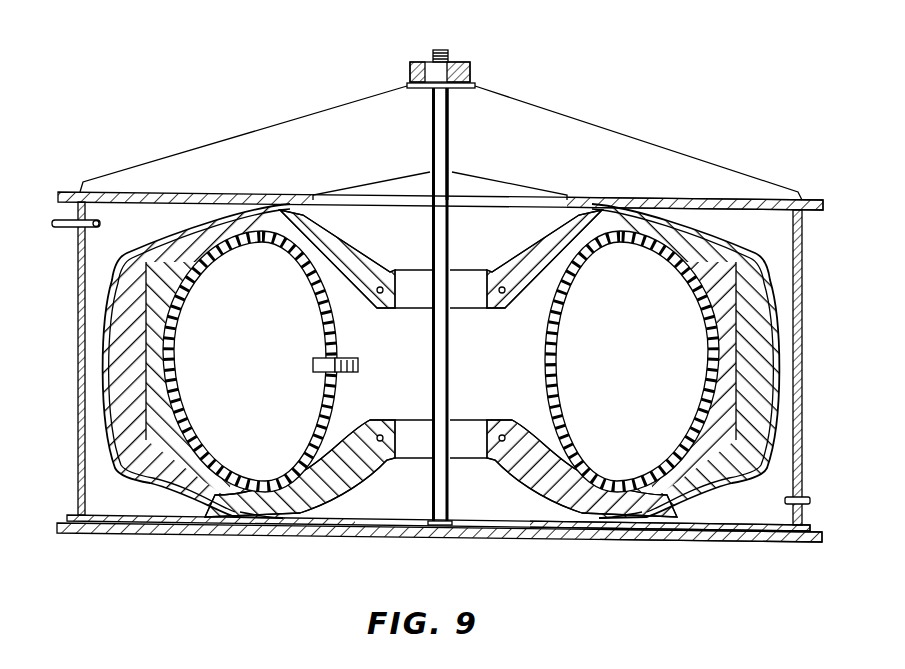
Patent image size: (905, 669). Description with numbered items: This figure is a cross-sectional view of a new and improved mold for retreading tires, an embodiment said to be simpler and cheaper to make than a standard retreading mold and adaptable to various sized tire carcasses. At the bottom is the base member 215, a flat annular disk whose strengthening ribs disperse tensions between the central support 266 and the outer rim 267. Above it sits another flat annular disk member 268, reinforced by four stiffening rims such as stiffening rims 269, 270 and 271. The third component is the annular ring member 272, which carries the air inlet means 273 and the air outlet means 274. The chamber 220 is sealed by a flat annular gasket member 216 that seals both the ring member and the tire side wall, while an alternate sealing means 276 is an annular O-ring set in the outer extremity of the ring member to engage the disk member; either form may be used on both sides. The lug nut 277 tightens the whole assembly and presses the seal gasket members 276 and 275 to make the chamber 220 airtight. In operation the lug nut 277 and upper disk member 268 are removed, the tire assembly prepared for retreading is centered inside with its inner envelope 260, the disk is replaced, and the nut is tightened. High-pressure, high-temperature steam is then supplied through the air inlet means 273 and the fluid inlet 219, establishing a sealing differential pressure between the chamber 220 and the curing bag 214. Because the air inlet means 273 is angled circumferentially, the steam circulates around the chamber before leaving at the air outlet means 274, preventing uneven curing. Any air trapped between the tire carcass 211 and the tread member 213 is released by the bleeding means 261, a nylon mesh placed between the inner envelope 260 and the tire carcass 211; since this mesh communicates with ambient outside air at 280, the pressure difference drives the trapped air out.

The tire carcass 211 is at (203, 237).
The tread member 213 is at (136, 257).
The curing bag 214 is at (257, 352).
The base member 215 is at (583, 538).
The annular gasket member 216 is at (214, 522).
The fluid inlet 219 is at (358, 360).
The chamber 220 is at (117, 500).
The inner envelope 260 is at (276, 205).
The bleeding means 261 is at (233, 205).
The central support 266 is at (432, 497).
The outer rim 267 is at (800, 540).
The flat annular disk member 268 is at (78, 191).
The stiffening rim 269 is at (318, 87).
The stiffening rim 270 is at (557, 138).
The stiffening rim 271 is at (445, 123).
The annular ring member 272 is at (80, 478).
The air inlet means 273 is at (66, 229).
The air outlet means 274 is at (805, 500).
The seal gasket member 275 is at (292, 528).
The sealing means 276 is at (814, 200).
The lug nut 277 is at (462, 60).
The ambient outside air communication 280 is at (306, 211).